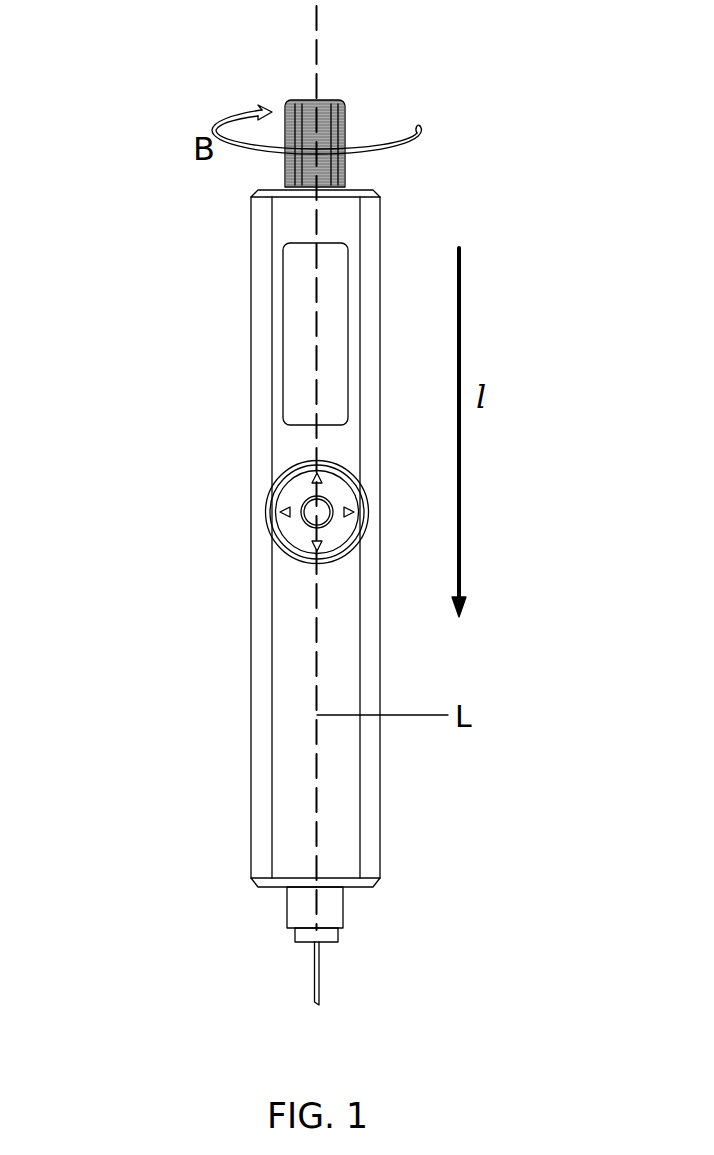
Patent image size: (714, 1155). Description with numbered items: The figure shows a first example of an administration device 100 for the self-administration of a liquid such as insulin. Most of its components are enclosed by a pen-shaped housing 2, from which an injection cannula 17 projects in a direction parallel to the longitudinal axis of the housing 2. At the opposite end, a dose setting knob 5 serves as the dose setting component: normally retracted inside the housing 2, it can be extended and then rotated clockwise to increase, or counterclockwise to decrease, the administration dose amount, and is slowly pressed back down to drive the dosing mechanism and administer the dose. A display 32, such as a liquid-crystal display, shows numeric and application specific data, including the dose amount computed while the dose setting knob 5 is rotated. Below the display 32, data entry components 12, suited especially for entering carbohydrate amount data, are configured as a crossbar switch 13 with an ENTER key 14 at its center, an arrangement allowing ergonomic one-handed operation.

The housing 2 is at (252, 640).
The dose setting knob 5 is at (341, 100).
The data entry components 12 is at (199, 500).
The crossbar switch 13 is at (298, 490).
The ENTER key 14 is at (317, 511).
The injection cannula 17 is at (313, 969).
The display 32 is at (295, 319).
The administration device 100 is at (447, 857).